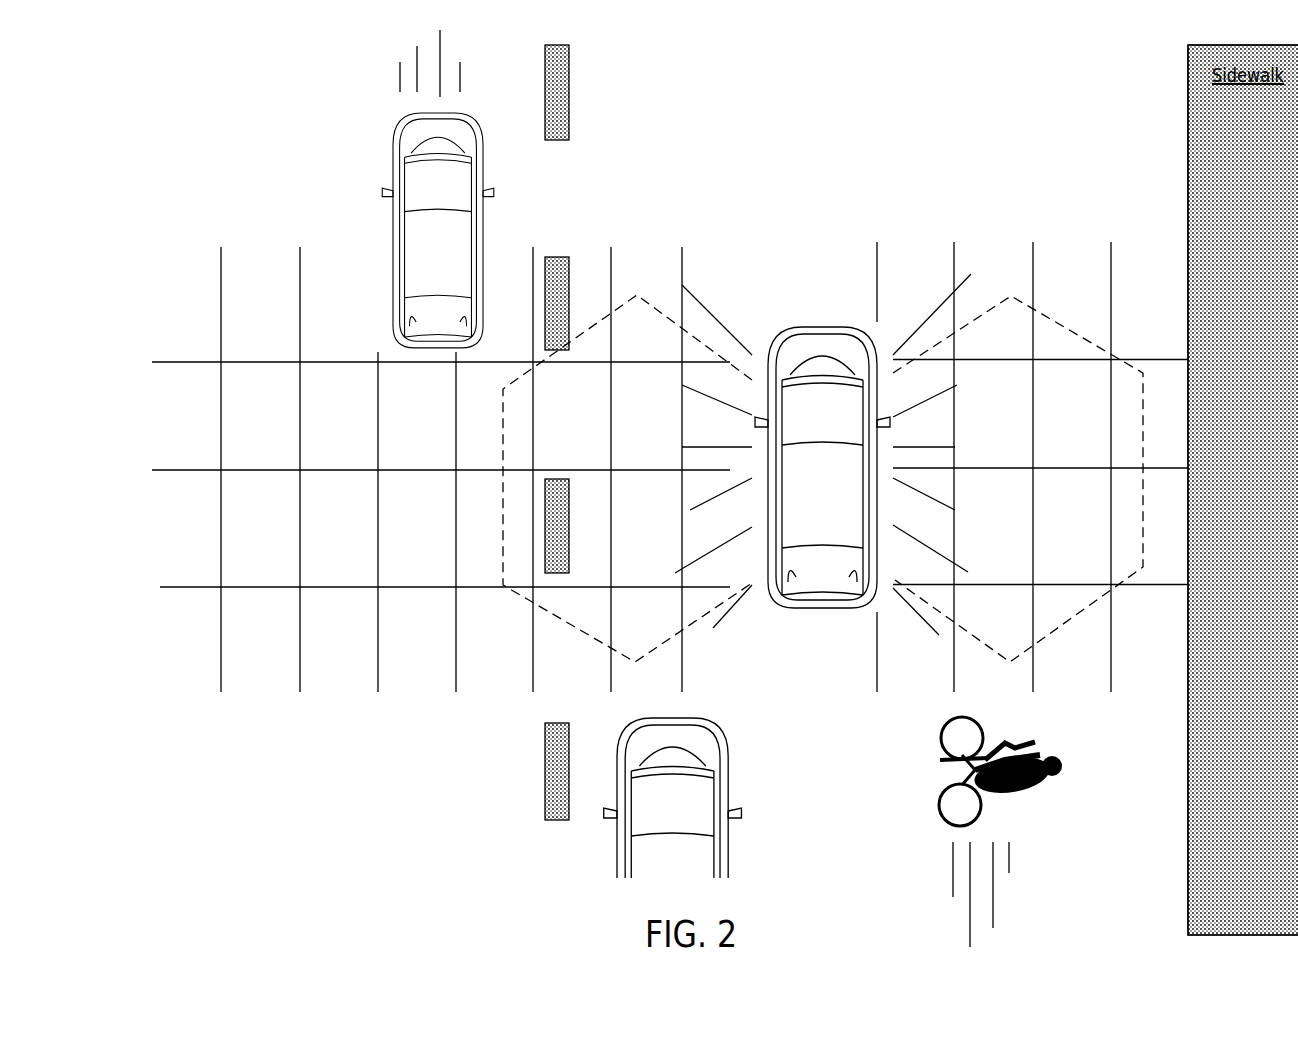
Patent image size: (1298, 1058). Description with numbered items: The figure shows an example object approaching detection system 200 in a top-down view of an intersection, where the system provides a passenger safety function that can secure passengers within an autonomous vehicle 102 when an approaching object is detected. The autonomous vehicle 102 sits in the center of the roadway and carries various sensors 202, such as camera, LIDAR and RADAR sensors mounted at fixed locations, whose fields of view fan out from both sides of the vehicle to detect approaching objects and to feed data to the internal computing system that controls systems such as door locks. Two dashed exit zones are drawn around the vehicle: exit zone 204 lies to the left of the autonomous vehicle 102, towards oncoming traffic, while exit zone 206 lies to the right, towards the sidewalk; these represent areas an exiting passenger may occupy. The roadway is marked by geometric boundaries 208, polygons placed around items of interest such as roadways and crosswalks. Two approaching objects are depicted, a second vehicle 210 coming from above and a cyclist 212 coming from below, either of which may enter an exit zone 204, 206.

The autonomous vehicle 102 is at (827, 607).
The object approaching detection system 200 is at (673, 150).
The sensors 202 is at (933, 286).
The exit zone 204 is at (503, 423).
The exit zone 206 is at (1033, 308).
The geometric boundaries 208 is at (180, 357).
The approaching object 210 is at (397, 128).
The approaching object 212 is at (1010, 733).